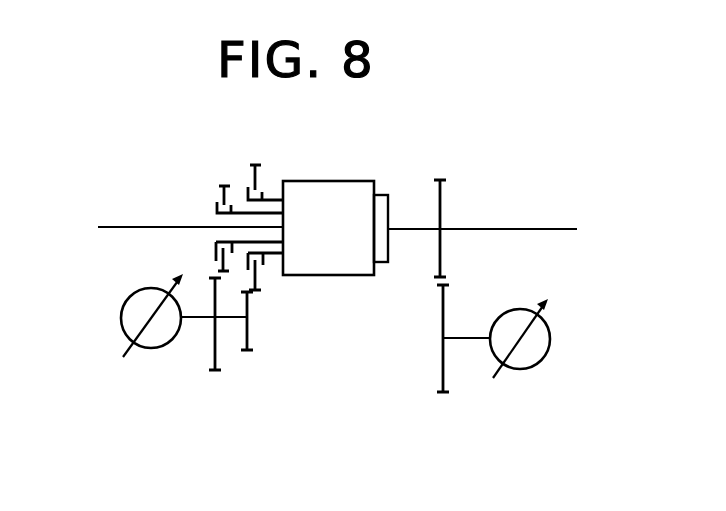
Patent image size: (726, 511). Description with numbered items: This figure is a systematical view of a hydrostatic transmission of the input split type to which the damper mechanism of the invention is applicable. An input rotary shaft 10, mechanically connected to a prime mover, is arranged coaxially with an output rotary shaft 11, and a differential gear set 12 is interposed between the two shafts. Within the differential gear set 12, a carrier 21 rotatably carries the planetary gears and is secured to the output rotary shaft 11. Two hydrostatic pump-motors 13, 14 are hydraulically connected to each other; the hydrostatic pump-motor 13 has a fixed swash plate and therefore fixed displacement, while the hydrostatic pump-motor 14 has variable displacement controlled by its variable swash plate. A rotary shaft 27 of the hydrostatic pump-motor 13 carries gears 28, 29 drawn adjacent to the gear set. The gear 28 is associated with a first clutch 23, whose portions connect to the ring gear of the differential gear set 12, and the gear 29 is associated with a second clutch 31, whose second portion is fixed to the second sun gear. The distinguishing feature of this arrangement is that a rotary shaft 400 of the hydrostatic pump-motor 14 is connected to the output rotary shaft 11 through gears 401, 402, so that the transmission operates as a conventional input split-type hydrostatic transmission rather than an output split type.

The input rotary shaft 10 is at (110, 228).
The output rotary shaft 11 is at (533, 229).
The differential gear set 12 is at (337, 178).
The hydrostatic pump-motor 13 is at (152, 342).
The hydrostatic pump-motor 14 is at (535, 352).
The carrier 21 is at (388, 198).
The first clutch 23 is at (268, 269).
The rotary shaft 27 is at (190, 320).
The gear 28 is at (248, 337).
The gear 29 is at (222, 358).
The second clutch 31 is at (218, 209).
The rotary shaft 400 is at (465, 338).
The gear 401 is at (443, 316).
The gear 402 is at (443, 252).